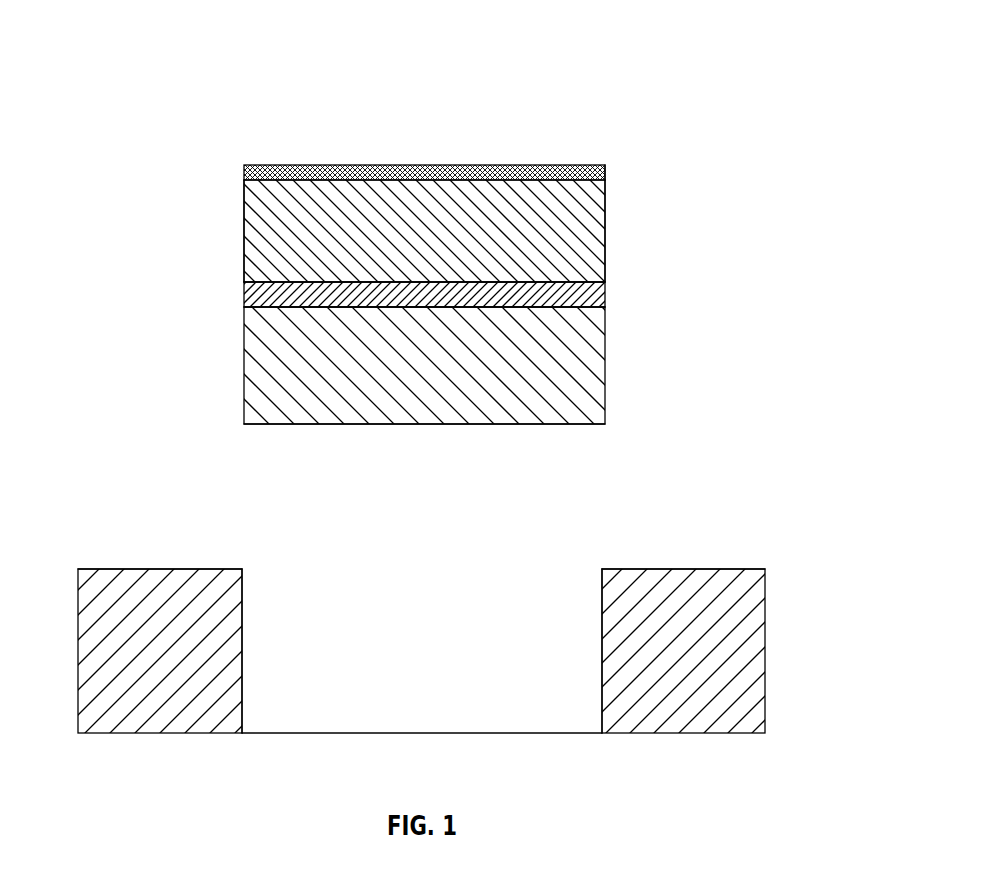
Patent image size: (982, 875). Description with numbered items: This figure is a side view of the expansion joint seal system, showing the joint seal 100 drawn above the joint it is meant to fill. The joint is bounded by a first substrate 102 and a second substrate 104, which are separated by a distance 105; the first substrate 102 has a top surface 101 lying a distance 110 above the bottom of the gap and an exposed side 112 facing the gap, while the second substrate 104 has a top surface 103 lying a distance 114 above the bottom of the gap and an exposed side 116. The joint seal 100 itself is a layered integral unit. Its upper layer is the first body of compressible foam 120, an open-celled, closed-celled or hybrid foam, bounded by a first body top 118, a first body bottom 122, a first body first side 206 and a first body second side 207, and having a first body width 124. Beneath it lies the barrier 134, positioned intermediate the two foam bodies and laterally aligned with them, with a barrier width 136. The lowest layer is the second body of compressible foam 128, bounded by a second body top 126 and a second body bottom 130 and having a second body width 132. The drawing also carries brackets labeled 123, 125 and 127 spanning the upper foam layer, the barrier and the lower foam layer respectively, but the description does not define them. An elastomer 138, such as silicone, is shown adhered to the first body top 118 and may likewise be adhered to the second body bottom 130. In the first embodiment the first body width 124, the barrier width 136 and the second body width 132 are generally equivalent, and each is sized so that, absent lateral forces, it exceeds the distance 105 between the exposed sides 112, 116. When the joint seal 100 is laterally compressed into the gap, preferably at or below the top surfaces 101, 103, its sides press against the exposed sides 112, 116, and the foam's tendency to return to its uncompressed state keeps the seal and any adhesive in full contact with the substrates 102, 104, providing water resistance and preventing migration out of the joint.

The joint seal 100 is at (103, 97).
The top surface of the first substrate 101 is at (158, 569).
The first substrate 102 is at (178, 664).
The top surface of the second substrate 103 is at (693, 569).
The second substrate 104 is at (702, 664).
The distance 105 is at (602, 763).
The distance 110 is at (23, 569).
The exposed side of the first substrate 112 is at (243, 590).
The distance 114 is at (787, 569).
The exposed side of the second substrate 116 is at (602, 590).
The first body top 118 is at (244, 172).
The first body of compressible foam 120 is at (582, 232).
The first body bottom 122 is at (605, 282).
The resonator stack 123 is at (150, 177).
The first body width 124 is at (605, 145).
The thickness of bottom electrode 125 is at (612, 283).
The second body top 126 is at (244, 306).
The support layer stack 127 is at (236, 306).
The second body of compressible foam 128 is at (583, 385).
The second body bottom 130 is at (248, 424).
The second body width 132 is at (605, 460).
The barrier 134 is at (244, 283).
The barrier width 136 is at (605, 493).
The elastomer 138 is at (605, 171).
The first body first side 206 is at (244, 203).
The first body second side 207 is at (605, 250).